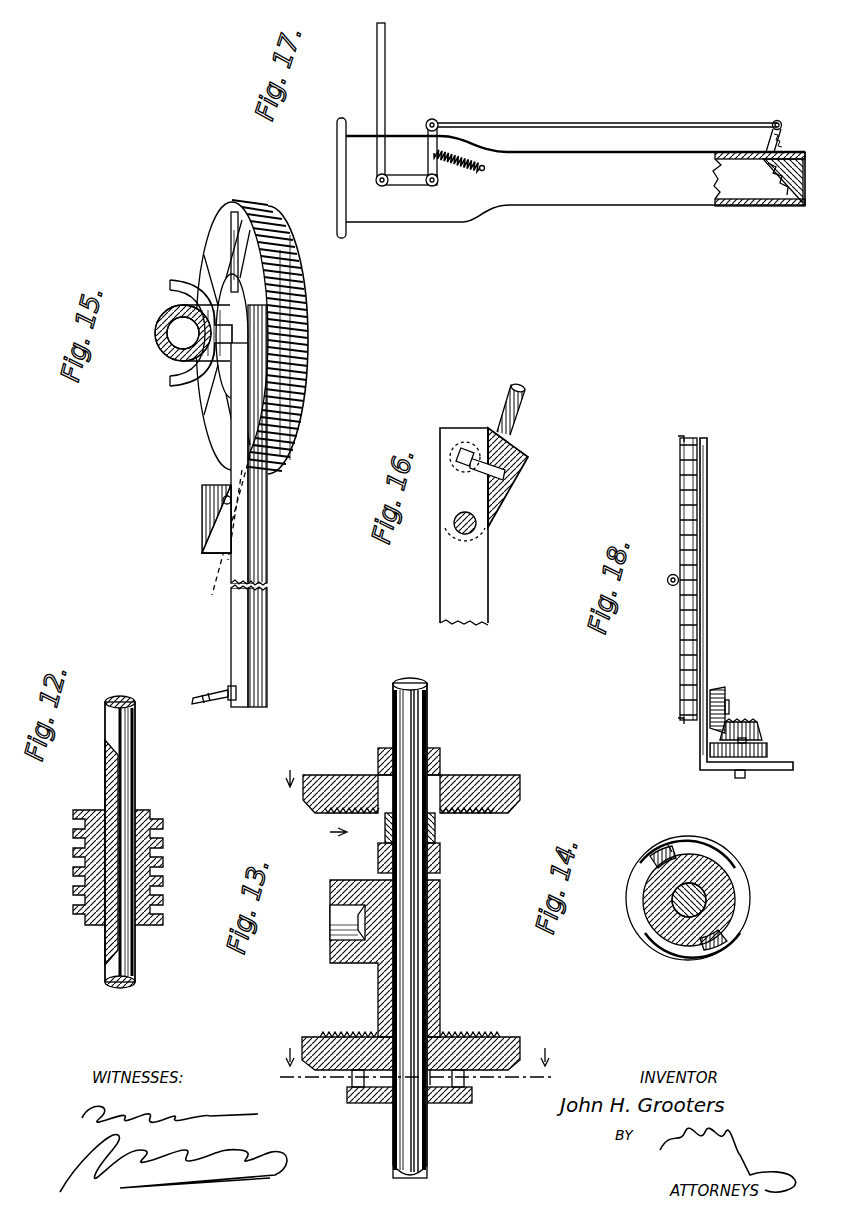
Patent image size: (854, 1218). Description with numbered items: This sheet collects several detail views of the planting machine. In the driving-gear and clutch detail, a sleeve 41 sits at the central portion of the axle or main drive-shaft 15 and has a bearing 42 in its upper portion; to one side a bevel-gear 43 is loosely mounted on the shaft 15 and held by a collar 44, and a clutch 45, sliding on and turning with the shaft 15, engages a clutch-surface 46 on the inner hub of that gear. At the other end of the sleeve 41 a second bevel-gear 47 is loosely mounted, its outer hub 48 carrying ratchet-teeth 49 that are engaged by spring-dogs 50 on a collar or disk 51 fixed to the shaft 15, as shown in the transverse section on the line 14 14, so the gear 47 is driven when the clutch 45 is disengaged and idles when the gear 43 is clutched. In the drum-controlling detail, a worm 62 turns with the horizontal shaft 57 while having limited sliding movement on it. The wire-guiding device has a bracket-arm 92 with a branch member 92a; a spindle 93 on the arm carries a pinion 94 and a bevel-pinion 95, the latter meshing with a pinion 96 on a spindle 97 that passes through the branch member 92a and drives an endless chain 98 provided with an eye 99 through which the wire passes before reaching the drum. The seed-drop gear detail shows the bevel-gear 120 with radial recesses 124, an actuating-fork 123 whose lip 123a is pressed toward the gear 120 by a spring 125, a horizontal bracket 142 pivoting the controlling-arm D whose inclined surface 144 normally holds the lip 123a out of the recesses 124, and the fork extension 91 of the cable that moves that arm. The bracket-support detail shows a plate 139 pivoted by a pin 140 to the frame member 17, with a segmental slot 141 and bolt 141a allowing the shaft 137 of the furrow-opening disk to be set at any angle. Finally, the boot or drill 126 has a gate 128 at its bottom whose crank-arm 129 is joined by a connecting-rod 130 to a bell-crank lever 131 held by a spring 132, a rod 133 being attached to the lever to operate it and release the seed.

In FIG. 13, the section line 14- 14 is at (406, 933).
In FIG. 13, the axle or main drive-shaft 15 is at (393, 705).
In FIG. 14, the axle or main drive-shaft 15 is at (690, 917).
In FIG. 15, the sectional front bottom of the lower front frame 17 is at (235, 604).
In FIG. 16, the sectional front bottom of the lower front frame 17 is at (488, 600).
In FIG. 13, the sleeve 41 is at (440, 920).
In FIG. 13, the bearing 42 is at (332, 915).
In FIG. 13, the bevel-gear 43 is at (350, 775).
In FIG. 13, the collar 44 is at (445, 740).
In FIG. 13, the clutch 45 is at (440, 855).
In FIG. 13, the clutch-surface 46 is at (385, 826).
In FIG. 13, the second bevel-gear 47 is at (325, 1040).
In FIG. 13, the outer hub 48 is at (440, 1060).
In FIG. 14, the outer hub 48 is at (668, 845).
In FIG. 13, the ratchet-teeth 49 is at (464, 1080).
In FIG. 14, the ratchet-teeth 49 is at (643, 905).
In FIG. 13, the spring-dogs 50 is at (352, 1080).
In FIG. 14, the spring-dogs 50 is at (660, 940).
In FIG. 13, the collar or disk 51 is at (440, 1105).
In FIG. 14, the collar or disk 51 is at (650, 862).
In FIG. 12, the horizontal shaft 57 is at (105, 716).
In FIG. 12, the worm 62 is at (73, 868).
In FIG. 15, the fork extension 91 is at (200, 690).
In FIG. 18, the bracket-arm 92 is at (762, 770).
In FIG. 18, the branch member 92a is at (719, 600).
In FIG. 18, the spindle 93 is at (737, 780).
In FIG. 18, the pinion 94 is at (767, 748).
In FIG. 18, the bevel-pinion 95 is at (756, 726).
In FIG. 18, the pinion 96 is at (724, 695).
In FIG. 18, the spindle 97 is at (680, 712).
In FIG. 18, the endless chain 98 is at (680, 632).
In FIG. 18, the eye 99 is at (670, 575).
In FIG. 15, the bevel-gear 120 is at (288, 420).
In FIG. 15, the actuating-fork 123 is at (203, 288).
In FIG. 15, the lip 123a is at (243, 251).
In FIG. 15, the radial recesses 124 is at (231, 222).
In FIG. 15, the spring 125 is at (155, 333).
In FIG. 17, the boot or drill conductor 126 is at (571, 178).
In FIG. 17, the gate 128 is at (778, 206).
In FIG. 17, the crank-arm 129 is at (783, 126).
In FIG. 17, the connecting-rod 130 is at (605, 106).
In FIG. 17, the bell-crank lever 131 is at (427, 166).
In FIG. 17, the spring 132 is at (478, 172).
In FIG. 17, the rod 133 is at (377, 82).
In FIG. 16, the shaft 137 is at (506, 395).
In FIG. 16, the plate 139 is at (520, 480).
In FIG. 16, the pin 140 is at (454, 527).
In FIG. 16, the segmental slot 141 is at (505, 462).
In FIG. 16, the bolt 141a is at (462, 452).
In FIG. 15, the horizontal bracket 142 is at (202, 505).
In FIG. 15, the inclined surface 144 is at (315, 275).